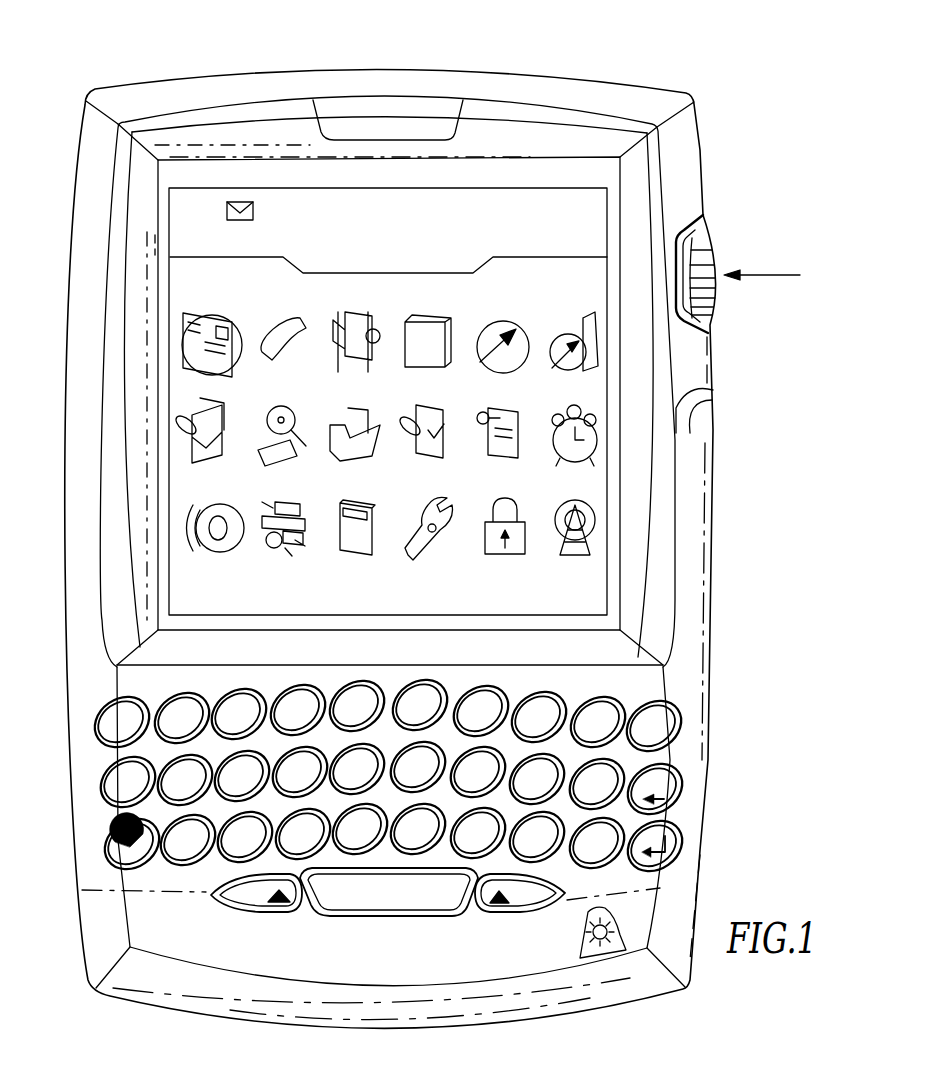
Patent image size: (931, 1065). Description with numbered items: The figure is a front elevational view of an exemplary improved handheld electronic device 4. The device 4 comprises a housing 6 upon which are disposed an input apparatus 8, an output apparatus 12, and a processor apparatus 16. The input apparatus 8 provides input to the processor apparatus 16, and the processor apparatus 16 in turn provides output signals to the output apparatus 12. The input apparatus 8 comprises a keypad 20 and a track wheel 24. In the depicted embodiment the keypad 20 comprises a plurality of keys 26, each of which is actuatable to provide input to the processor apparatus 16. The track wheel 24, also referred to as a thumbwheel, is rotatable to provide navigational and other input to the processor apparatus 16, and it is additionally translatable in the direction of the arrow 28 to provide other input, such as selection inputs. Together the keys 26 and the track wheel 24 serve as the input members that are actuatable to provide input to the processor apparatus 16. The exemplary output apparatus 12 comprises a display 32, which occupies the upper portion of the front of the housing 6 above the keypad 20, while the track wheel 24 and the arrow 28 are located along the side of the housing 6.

The handheld electronic device 4 is at (509, 65).
The housing 6 is at (701, 150).
The input apparatus 8 is at (739, 329).
The output apparatus 12 is at (586, 228).
The processor apparatus 16 is at (256, 947).
The keypad 20 is at (684, 754).
The track wheel 24 is at (706, 240).
The keys 26 is at (171, 694).
The arrow 28 is at (765, 275).
The display 32 is at (533, 210).